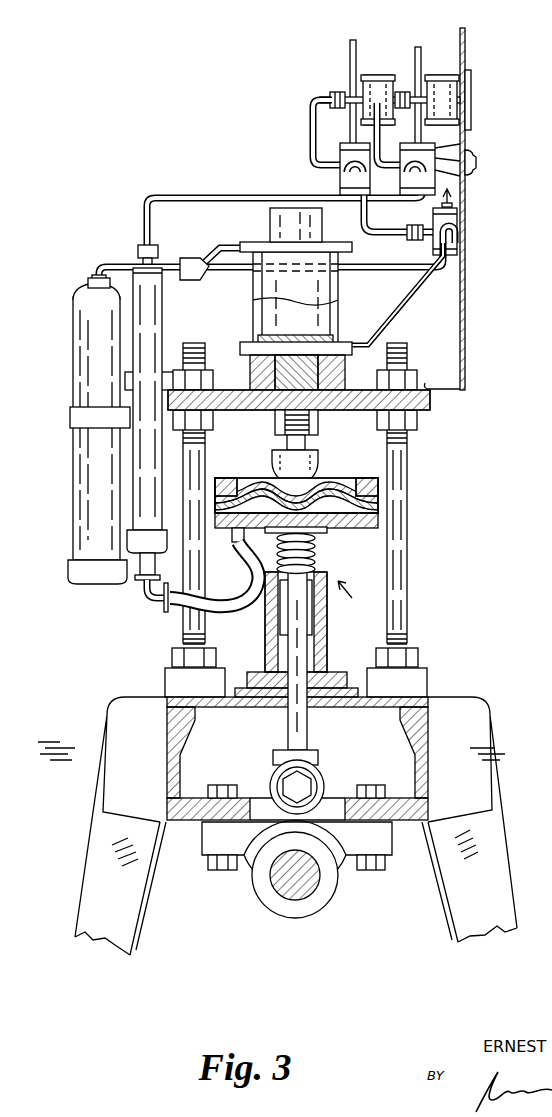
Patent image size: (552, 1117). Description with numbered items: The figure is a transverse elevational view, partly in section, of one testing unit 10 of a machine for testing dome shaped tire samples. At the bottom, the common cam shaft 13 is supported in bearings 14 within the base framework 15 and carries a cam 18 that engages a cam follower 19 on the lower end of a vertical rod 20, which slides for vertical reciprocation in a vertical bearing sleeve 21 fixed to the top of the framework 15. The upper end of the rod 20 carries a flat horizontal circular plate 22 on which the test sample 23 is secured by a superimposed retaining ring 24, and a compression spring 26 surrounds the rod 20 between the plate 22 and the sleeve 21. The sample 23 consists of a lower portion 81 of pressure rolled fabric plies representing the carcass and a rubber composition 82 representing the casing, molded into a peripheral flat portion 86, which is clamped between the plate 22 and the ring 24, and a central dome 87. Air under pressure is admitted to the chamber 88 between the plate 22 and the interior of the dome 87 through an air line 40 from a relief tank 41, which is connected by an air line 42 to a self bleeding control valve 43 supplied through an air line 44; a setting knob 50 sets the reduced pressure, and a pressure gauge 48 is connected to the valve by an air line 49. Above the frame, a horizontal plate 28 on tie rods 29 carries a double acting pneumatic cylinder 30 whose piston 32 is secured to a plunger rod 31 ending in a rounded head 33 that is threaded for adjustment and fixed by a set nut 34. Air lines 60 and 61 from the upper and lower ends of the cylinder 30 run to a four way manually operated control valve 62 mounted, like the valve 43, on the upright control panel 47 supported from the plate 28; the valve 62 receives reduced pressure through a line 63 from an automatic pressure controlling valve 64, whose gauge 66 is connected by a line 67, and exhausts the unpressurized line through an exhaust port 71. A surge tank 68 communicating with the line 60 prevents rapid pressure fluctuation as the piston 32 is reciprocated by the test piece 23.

The testing unit 10 is at (358, 601).
The cam shaft 13 is at (300, 887).
The bearings 14 is at (262, 906).
The base framework 15 is at (478, 794).
The cam 18 is at (337, 880).
The cam follower 19 is at (268, 790).
The vertical rod 20 is at (300, 730).
The vertical bearing sleeve 21 is at (322, 644).
The flat horizontal circular plate 22 is at (378, 523).
The test sample 23 is at (354, 481).
The retaining ring 24 is at (378, 490).
The compression spring 26 is at (316, 556).
The horizontal plate 28 is at (434, 409).
The tie rods 29 is at (396, 584).
The double acting pneumatic cylinder 30 is at (268, 276).
The plunger rod 31 is at (322, 369).
The piston 32 is at (288, 336).
The rounded head 33 is at (312, 470).
The set nut 34 is at (318, 428).
The air line 40 is at (175, 606).
The relief tank 41 is at (145, 464).
The air line 42 is at (160, 197).
The control valve 43 is at (437, 150).
The air line 44 is at (418, 62).
The control panel 47 is at (465, 316).
The pressure gauge 48 is at (470, 78).
The air line 49 is at (390, 96).
The setting knob 50 is at (472, 161).
The air line 60 is at (198, 257).
The air line 61 is at (403, 290).
The four way manually operated control valve 62 is at (458, 213).
The line 63 is at (402, 236).
The automatic pressure controlling valve 64 is at (340, 183).
The pressure gauge 66 is at (313, 135).
The line 67 is at (370, 86).
The surge tank 68 is at (90, 520).
The exhaust port 71 is at (452, 201).
The lower portion of test sample 81 is at (378, 511).
The rubber composition 82 is at (378, 506).
The peripheral flat portion 86 is at (225, 485).
The dome 87 is at (275, 485).
The chamber 88 is at (237, 530).